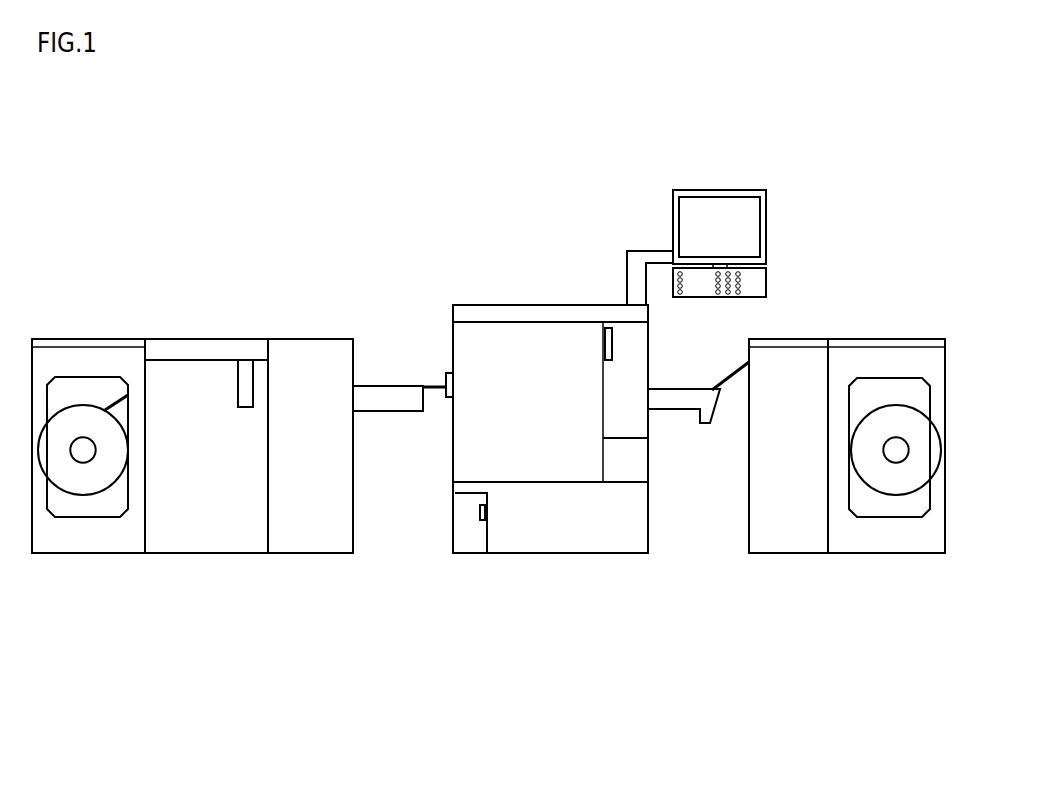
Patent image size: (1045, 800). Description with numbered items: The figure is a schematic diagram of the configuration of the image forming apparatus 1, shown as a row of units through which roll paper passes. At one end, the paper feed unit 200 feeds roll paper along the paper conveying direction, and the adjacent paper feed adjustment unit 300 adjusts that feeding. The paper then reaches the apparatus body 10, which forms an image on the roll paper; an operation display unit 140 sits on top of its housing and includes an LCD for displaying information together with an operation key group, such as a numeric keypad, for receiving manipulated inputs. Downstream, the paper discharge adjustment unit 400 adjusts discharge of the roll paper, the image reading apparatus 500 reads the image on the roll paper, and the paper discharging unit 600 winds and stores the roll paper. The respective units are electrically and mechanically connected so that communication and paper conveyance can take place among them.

The image forming apparatus 1 is at (505, 693).
The apparatus body 10 is at (550, 557).
The operation display unit 140 is at (721, 188).
The paper feed unit 200 is at (890, 557).
The paper feed adjustment unit 300 is at (785, 557).
The paper discharge adjustment unit 400 is at (308, 557).
The image reading apparatus 500 is at (213, 557).
The paper discharging unit 600 is at (87, 557).